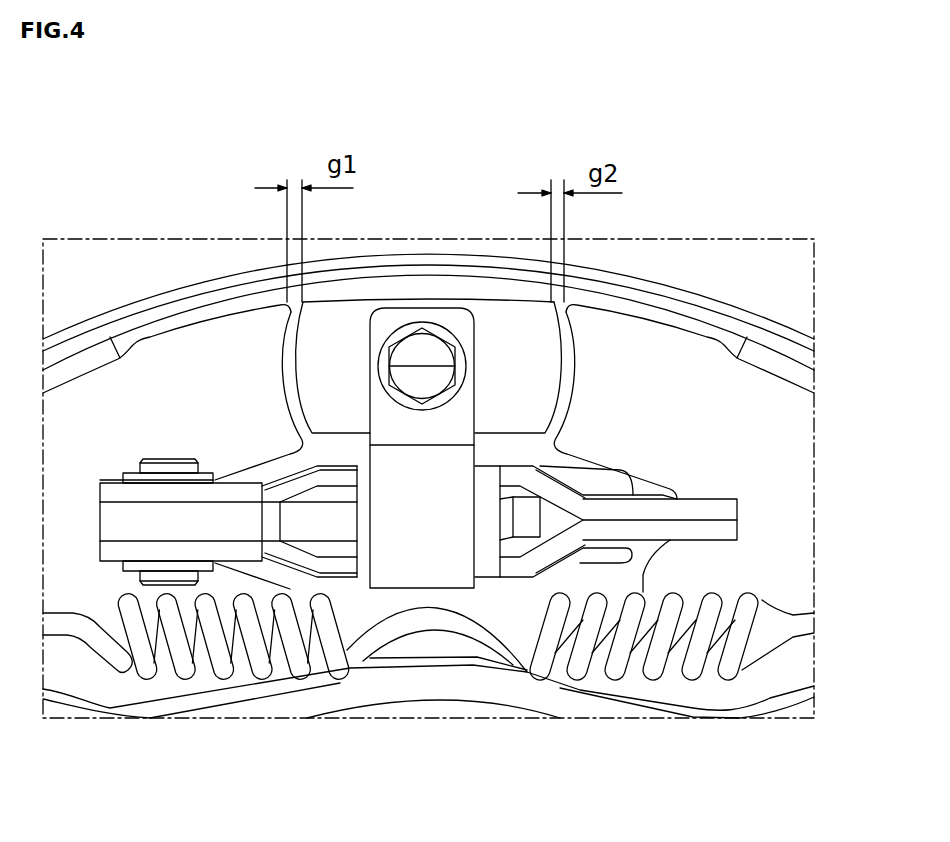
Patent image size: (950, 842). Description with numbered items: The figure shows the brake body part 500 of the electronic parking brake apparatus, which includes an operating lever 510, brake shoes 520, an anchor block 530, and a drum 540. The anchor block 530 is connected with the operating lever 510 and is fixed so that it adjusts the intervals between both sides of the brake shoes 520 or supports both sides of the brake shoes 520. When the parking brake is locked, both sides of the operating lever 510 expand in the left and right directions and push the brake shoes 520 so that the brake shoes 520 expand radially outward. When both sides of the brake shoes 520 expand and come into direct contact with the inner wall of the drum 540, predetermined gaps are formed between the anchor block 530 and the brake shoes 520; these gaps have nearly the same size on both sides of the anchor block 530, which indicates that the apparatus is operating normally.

The brake body part 500 is at (744, 122).
The operating lever 510 is at (418, 560).
The brake shoes 520 is at (203, 340).
The anchor block 530 is at (503, 327).
The drum 540 is at (758, 268).